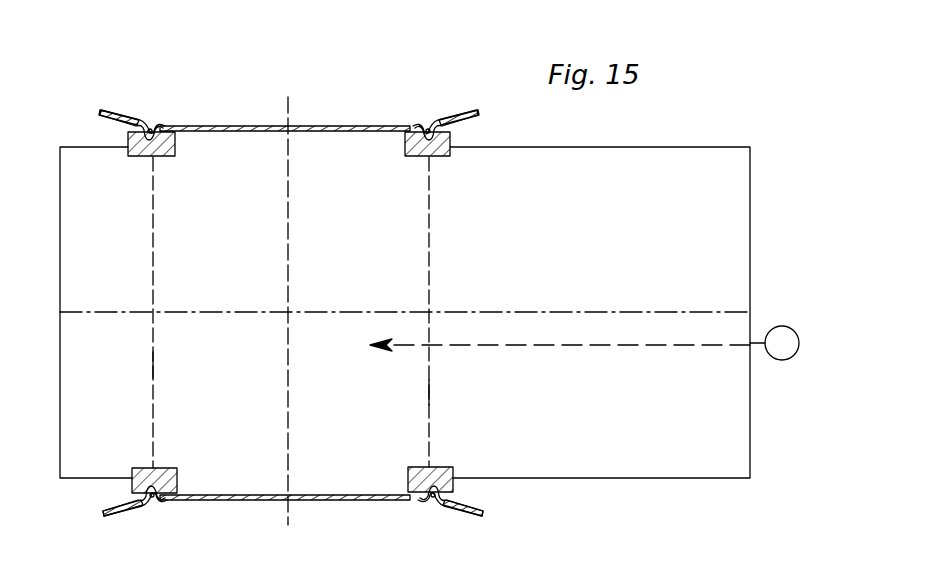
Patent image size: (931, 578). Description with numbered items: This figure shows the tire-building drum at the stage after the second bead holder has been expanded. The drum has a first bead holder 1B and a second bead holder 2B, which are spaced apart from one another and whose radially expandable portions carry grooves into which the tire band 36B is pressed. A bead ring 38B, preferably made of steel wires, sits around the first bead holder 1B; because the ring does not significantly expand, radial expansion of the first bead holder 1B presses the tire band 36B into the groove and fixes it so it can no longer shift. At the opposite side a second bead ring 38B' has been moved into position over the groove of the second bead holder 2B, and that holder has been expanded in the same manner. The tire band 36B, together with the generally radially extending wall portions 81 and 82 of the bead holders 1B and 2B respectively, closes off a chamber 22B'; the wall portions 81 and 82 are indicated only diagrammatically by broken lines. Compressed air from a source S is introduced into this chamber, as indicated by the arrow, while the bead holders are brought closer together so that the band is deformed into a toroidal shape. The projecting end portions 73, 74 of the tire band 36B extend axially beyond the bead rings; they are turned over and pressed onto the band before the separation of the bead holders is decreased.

The first bead holder 1B is at (179, 146).
The second bead holder 2B is at (456, 140).
The chamber 22B' is at (405, 311).
The tire band 36B is at (302, 126).
The bead ring 38B is at (132, 101).
The second bead ring 38B' is at (436, 106).
The projecting end portion of the tire band 73 is at (125, 513).
The projecting end portion of the tire band 74 is at (460, 513).
The radially extending wall portion 81 is at (156, 365).
The radially extending wall portion 82 is at (428, 392).
The source of compressed air S is at (584, 343).